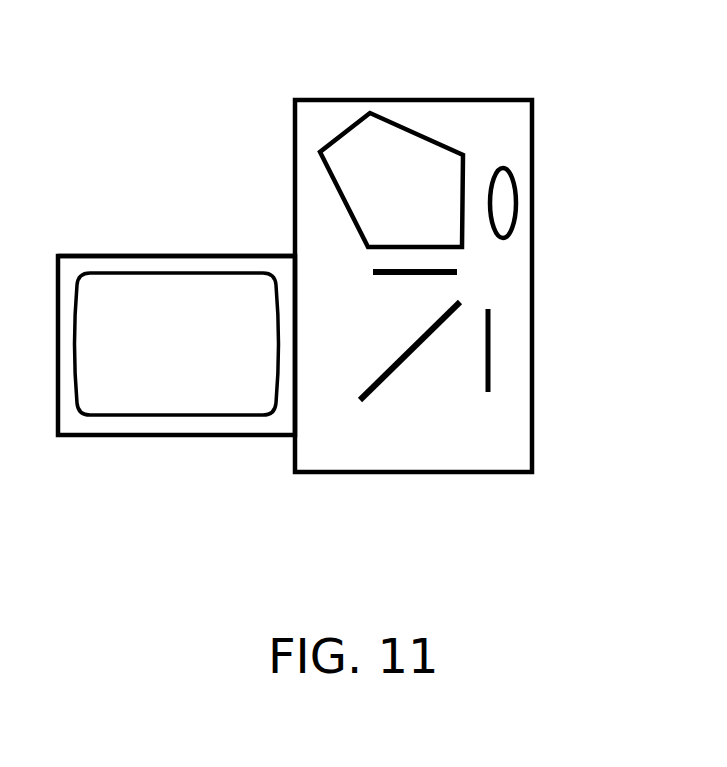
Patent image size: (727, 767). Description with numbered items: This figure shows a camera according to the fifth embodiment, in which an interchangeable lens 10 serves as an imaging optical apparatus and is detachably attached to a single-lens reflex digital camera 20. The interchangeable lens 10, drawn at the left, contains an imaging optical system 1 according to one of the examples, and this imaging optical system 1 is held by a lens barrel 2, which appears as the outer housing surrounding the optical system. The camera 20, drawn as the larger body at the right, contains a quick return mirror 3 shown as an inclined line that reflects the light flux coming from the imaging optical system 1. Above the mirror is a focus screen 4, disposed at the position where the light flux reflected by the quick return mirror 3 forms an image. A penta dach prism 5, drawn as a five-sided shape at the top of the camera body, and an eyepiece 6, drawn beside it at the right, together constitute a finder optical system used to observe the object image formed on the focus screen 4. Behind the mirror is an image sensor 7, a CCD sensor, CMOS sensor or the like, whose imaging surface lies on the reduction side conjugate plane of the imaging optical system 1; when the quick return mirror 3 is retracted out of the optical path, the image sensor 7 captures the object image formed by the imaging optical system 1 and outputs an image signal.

The imaging optical system 1 is at (105, 273).
The lens barrel 2 is at (200, 435).
The quick return mirror 3 is at (398, 367).
The focus screen 4 is at (398, 276).
The penta dach prism 5 is at (337, 135).
The eyepiece 6 is at (503, 173).
The image sensor 7 is at (488, 352).
The interchangeable lens 10 is at (195, 255).
The single-lens reflex digital camera 20 is at (408, 100).